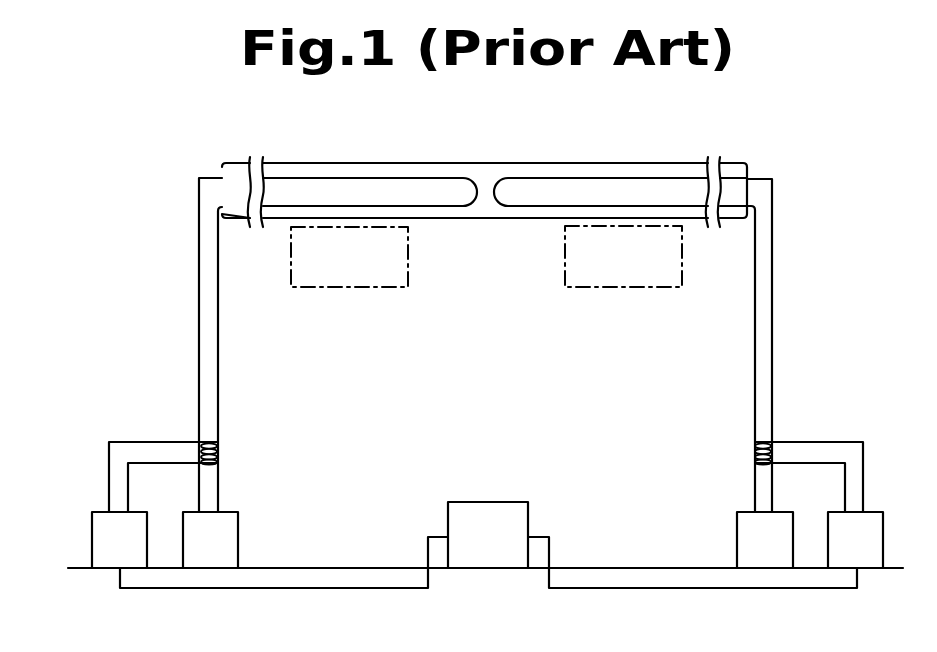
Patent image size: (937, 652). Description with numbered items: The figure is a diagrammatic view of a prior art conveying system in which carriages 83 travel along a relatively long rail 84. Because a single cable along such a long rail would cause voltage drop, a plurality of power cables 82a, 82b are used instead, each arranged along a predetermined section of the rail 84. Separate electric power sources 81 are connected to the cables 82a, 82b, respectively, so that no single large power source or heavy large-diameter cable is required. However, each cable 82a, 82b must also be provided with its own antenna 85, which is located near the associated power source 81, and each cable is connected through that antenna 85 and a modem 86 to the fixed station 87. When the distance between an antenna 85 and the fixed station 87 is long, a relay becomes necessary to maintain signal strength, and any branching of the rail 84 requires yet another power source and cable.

The electric power source 81 is at (240, 532).
The power cable 82a is at (198, 278).
The power cable 82b is at (772, 282).
The carriage 83 is at (345, 288).
The rail 84 is at (746, 163).
The antenna 85 is at (219, 444).
The modem 86 is at (100, 512).
The fixed station 87 is at (488, 502).